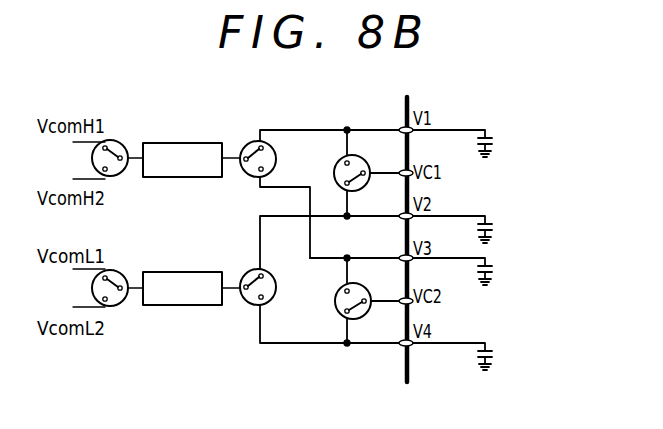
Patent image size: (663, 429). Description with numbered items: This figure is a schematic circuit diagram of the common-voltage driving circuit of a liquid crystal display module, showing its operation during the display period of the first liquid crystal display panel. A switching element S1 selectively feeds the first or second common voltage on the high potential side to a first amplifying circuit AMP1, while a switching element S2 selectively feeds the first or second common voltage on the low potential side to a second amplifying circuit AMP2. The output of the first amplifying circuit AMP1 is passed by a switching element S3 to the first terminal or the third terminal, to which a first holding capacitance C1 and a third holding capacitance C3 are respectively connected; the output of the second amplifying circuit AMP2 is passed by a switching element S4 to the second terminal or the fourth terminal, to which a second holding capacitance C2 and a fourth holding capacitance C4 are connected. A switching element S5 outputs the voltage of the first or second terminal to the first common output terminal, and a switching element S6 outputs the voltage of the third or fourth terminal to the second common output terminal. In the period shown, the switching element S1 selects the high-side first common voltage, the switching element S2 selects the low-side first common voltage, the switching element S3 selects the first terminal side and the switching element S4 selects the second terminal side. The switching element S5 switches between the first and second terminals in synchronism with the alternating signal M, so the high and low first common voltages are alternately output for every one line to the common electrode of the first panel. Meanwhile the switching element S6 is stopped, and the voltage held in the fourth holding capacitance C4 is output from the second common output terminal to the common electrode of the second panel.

The switching element S1 is at (126, 142).
The switching element S2 is at (126, 272).
The switching element S3 is at (259, 140).
The switching element S4 is at (277, 291).
The switching element S5 is at (339, 159).
The switching element S6 is at (364, 319).
The alternating signal M is at (363, 156).
The first amplifying circuit AMP1 is at (182, 160).
The second amplifying circuit AMP2 is at (182, 288).
The first holding capacitance C1 is at (494, 141).
The second holding capacitance C2 is at (494, 228).
The third holding capacitance C3 is at (494, 271).
The fourth holding capacitance C4 is at (494, 356).